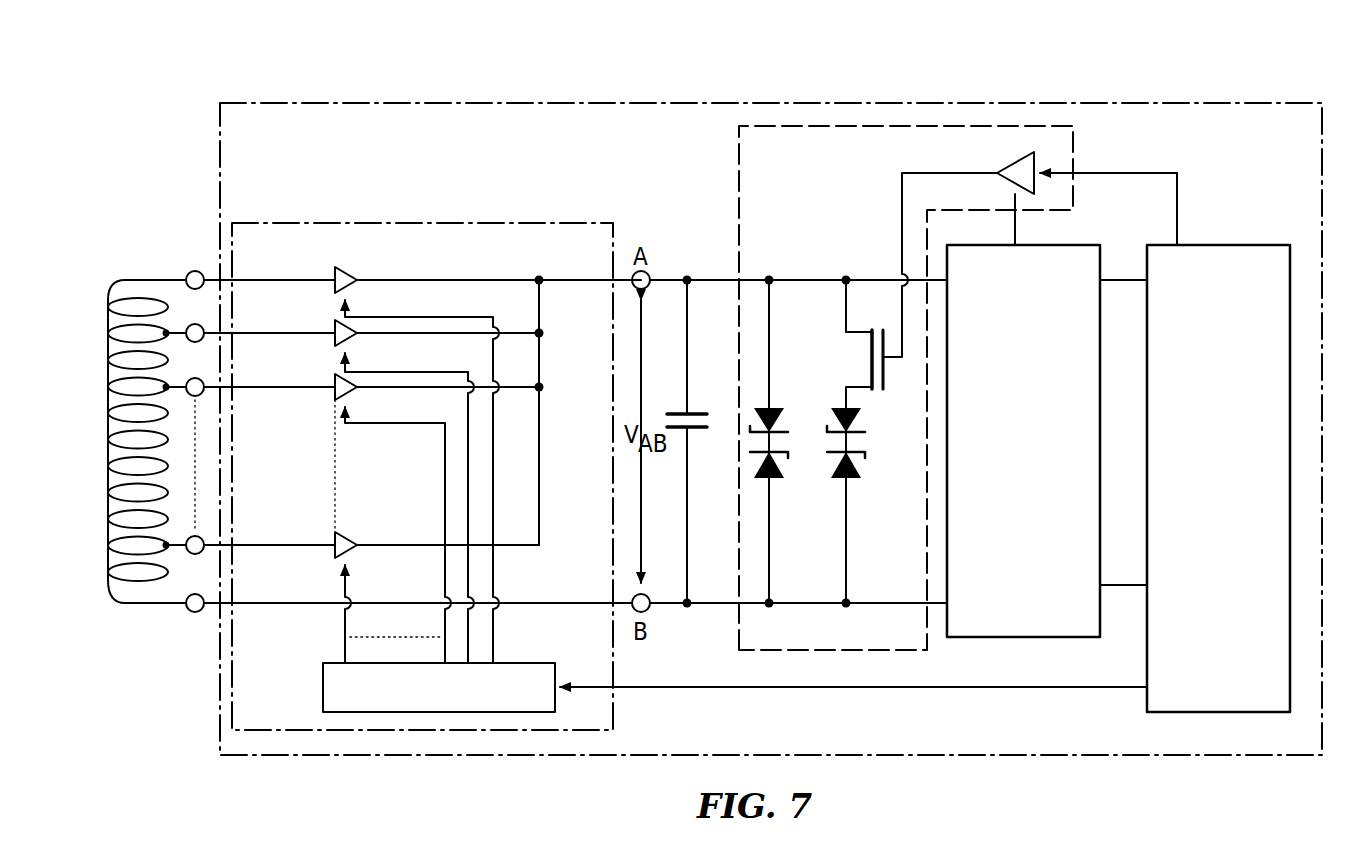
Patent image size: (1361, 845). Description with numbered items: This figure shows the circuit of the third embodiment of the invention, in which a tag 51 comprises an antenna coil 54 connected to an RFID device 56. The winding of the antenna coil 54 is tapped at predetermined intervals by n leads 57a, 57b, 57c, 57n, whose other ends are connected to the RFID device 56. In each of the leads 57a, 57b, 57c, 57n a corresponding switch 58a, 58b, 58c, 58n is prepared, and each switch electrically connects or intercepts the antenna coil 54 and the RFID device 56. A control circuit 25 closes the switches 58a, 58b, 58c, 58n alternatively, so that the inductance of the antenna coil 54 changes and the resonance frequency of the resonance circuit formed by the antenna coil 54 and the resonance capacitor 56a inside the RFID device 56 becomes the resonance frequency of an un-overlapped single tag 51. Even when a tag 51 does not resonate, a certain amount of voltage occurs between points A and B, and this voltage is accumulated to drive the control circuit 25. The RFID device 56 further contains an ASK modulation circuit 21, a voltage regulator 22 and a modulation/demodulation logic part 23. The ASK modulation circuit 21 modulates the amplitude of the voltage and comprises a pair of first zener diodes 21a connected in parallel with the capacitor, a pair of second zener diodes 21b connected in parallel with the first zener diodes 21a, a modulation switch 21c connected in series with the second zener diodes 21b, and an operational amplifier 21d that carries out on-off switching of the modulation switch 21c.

The tag 51 is at (246, 86).
The RFID device 56 is at (420, 102).
The antenna coil 54 is at (110, 302).
The resonance capacitor 56a is at (690, 411).
The lead 57a is at (306, 279).
The lead 57b is at (306, 332).
The lead 57c is at (256, 389).
The lead 57n is at (306, 544).
The switch 58a is at (344, 267).
The switch 58b is at (334, 342).
The switch 58c is at (335, 398).
The switch 58n is at (334, 554).
The control circuit 25 is at (322, 690).
The ASK modulation circuit 21 is at (737, 176).
The first zener diode 21a is at (780, 430).
The second zener diode 21b is at (858, 428).
The modulation switch 21c is at (871, 357).
The operational amplifier 21d is at (1000, 166).
The voltage regulator 22 is at (1015, 637).
The modulation/demodulation logic part 23 is at (1215, 712).